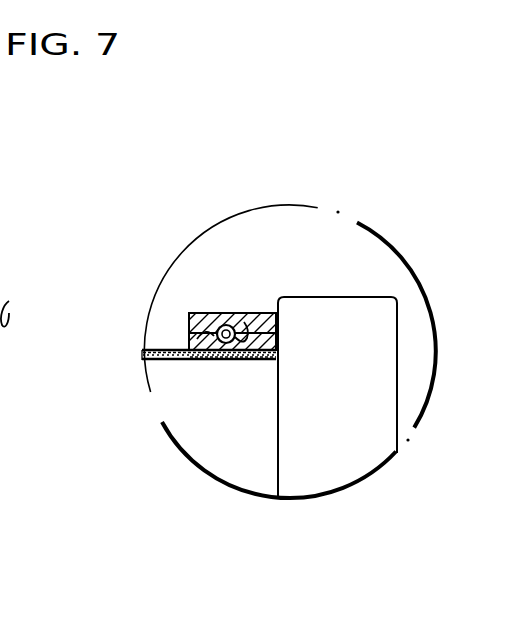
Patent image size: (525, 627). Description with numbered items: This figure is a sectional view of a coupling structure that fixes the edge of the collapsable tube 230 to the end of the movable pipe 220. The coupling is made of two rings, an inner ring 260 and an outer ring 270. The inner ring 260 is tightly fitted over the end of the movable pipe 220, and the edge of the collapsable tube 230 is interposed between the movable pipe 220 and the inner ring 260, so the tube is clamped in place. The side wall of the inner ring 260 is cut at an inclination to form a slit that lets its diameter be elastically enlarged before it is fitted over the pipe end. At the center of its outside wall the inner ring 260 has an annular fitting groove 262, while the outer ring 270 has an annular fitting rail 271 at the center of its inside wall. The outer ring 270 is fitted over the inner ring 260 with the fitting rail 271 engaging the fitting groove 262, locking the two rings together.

The movable pipe 220 is at (202, 437).
The collapsable tube 230 is at (155, 350).
The inner ring 260 is at (172, 360).
The annular fitting groove 262 is at (207, 359).
The outer ring 270 is at (258, 313).
The annular fitting rail 271 is at (236, 329).